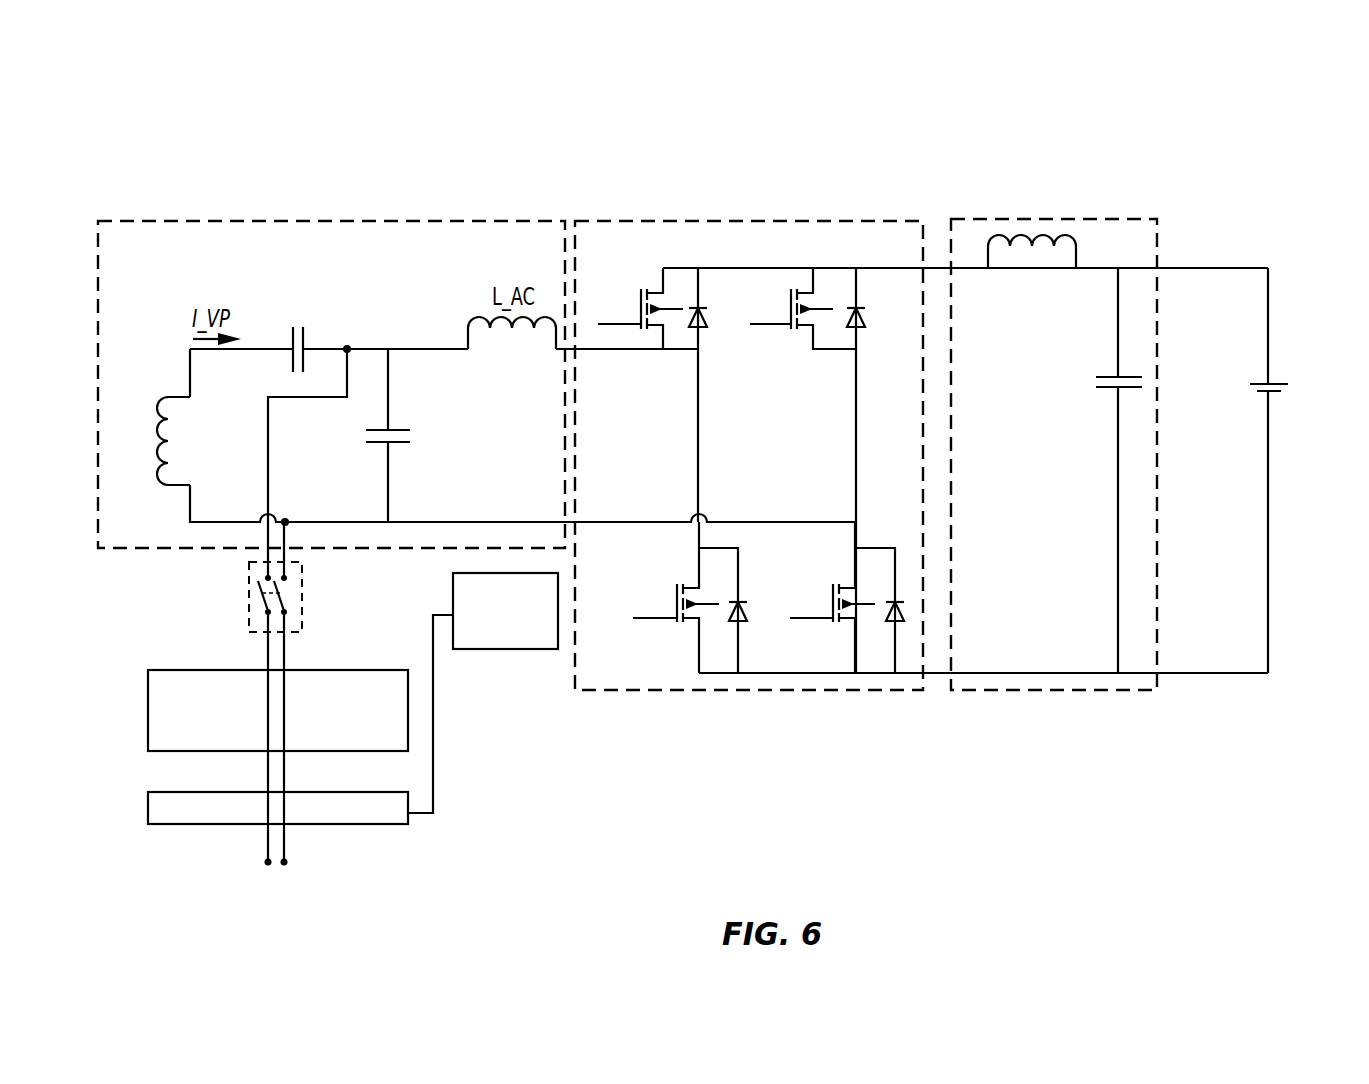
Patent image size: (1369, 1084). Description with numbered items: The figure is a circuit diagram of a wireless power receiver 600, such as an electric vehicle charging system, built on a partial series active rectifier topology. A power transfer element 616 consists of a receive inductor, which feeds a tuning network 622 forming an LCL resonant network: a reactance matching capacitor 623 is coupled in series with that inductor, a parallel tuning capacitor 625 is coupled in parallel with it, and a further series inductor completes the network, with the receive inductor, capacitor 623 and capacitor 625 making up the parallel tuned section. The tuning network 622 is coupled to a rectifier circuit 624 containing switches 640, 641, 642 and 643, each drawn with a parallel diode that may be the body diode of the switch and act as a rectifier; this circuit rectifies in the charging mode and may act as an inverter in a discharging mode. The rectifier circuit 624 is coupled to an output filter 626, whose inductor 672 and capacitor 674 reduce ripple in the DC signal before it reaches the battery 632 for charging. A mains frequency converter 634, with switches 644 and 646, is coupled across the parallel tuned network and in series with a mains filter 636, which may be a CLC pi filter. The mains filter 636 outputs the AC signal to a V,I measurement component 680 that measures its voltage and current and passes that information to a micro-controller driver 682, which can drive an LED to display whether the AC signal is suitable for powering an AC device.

The wireless power receiver 600 is at (200, 127).
The tuning network 622 is at (137, 214).
The power transfer element 616 is at (175, 397).
The capacitor 623 is at (297, 372).
The capacitor 625 is at (400, 442).
The switch 640 is at (660, 340).
The switch 641 is at (690, 620).
The switch 642 is at (826, 340).
The switch 643 is at (848, 618).
The rectifier circuit 624 is at (752, 700).
The output filter 626 is at (1058, 700).
The inductor 672 is at (998, 238).
The capacitor 674 is at (1128, 388).
The battery 632 is at (1274, 392).
The mains frequency converter 634 is at (240, 613).
The switch 644 is at (258, 585).
The switch 646 is at (290, 602).
The mains filter 636 is at (408, 713).
The V,I measurement component 680 is at (408, 824).
The micro-controller driver 682 is at (478, 649).